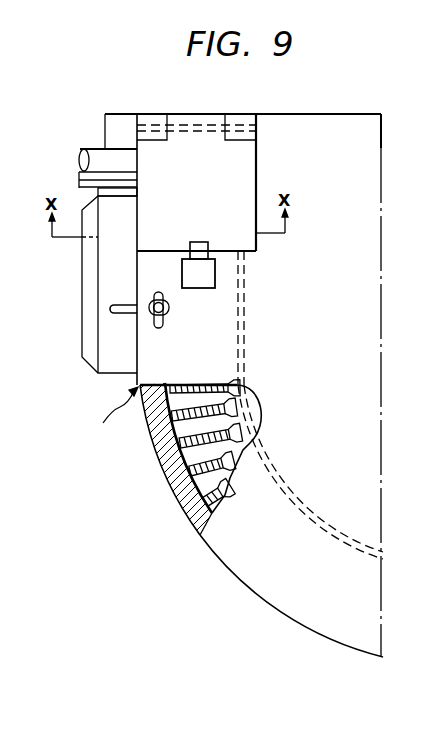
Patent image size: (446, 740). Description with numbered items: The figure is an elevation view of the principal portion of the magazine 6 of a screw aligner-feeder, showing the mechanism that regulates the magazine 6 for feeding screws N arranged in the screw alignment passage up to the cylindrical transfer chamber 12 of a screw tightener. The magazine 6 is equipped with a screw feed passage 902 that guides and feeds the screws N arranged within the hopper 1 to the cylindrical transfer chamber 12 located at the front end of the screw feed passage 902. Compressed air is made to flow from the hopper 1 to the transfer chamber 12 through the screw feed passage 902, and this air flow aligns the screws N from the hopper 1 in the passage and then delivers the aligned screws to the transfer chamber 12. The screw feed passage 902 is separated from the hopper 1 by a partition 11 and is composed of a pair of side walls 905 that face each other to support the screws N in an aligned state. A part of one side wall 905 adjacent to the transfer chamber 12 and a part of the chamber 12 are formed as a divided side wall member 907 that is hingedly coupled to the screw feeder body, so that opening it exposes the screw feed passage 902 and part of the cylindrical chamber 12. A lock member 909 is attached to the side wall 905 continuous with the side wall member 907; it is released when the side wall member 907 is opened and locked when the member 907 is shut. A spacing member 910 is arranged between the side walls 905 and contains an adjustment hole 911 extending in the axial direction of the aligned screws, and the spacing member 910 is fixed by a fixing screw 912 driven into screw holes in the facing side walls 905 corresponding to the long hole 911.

The hopper 1 is at (363, 323).
The cylindrical transfer chamber 12 is at (97, 160).
The divided side wall member 907 is at (183, 147).
The side walls 905 is at (162, 367).
The spacing member 910 is at (105, 270).
The lock member 909 is at (190, 277).
The adjustment hole 911 is at (117, 317).
The fixing screw 912 is at (152, 320).
The screw feed passage 902 is at (182, 400).
The partition 11 is at (253, 402).
The screws N is at (158, 443).
The magazine 6 is at (113, 414).